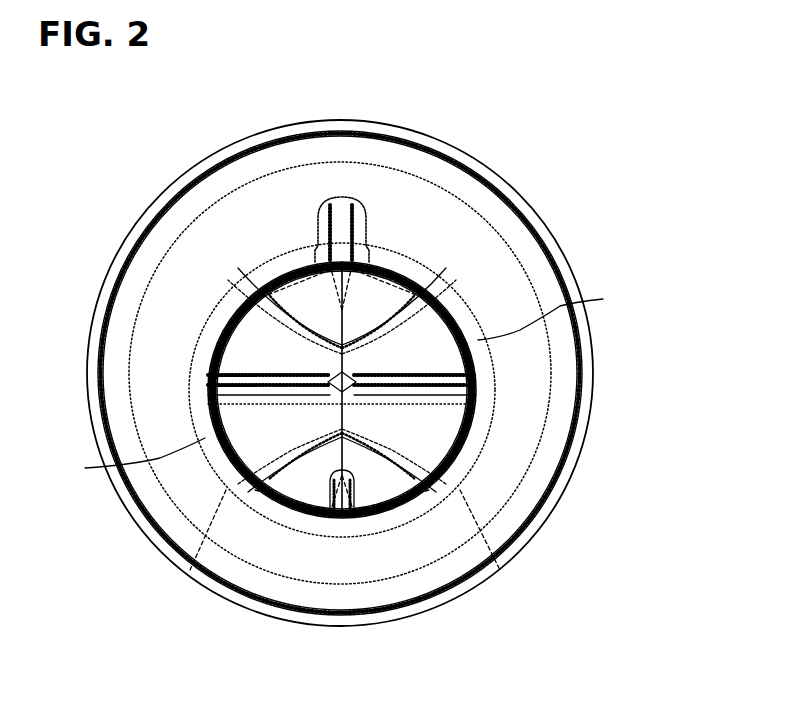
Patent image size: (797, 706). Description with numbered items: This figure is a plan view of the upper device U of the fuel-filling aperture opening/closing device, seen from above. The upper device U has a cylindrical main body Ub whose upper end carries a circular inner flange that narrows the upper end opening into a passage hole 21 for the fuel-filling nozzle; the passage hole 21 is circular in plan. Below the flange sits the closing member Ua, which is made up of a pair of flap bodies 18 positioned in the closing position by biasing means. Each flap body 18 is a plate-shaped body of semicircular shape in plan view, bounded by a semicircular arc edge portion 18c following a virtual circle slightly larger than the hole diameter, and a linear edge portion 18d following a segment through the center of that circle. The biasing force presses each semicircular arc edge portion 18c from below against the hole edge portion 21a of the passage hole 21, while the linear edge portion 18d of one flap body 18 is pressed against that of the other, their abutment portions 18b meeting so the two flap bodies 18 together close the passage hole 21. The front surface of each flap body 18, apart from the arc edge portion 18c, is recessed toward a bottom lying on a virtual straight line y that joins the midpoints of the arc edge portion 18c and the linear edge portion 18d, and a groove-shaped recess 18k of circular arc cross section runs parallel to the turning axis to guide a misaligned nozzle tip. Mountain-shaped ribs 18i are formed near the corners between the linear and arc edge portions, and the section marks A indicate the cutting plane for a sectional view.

The flap body 18 is at (483, 478).
The upper device U is at (497, 205).
The closing member Ua is at (533, 273).
The cylindrical main body Ub is at (591, 322).
The abutment portion 18b is at (275, 300).
The semicircular arc edge portion 18c is at (480, 365).
The linear edge portion 18d is at (256, 488).
The mountain-shaped rib 18i is at (292, 258).
The groove-shaped recess 18k is at (346, 385).
The passage hole 21 is at (475, 410).
The hole edge portion 21a is at (497, 568).
The virtual straight line y is at (288, 378).
The section line A is at (605, 376).